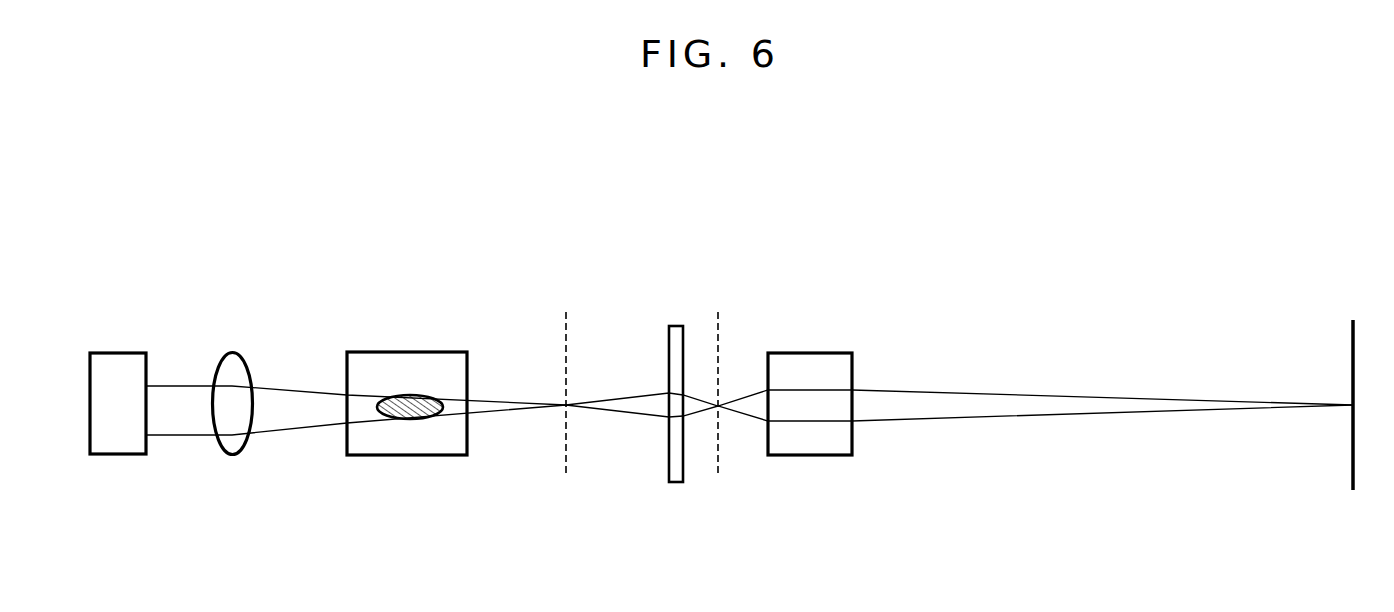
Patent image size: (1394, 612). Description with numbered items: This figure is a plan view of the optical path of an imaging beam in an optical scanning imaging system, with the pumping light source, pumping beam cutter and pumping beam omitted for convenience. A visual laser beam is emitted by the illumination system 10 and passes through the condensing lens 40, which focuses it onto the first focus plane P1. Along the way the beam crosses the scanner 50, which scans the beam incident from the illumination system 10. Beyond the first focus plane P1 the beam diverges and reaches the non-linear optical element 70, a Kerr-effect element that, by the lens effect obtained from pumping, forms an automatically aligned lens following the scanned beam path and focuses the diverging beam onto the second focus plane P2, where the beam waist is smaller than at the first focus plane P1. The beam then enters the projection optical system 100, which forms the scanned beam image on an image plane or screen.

The illumination system 10 is at (120, 352).
The condensing lens 40 is at (235, 352).
The scanner 50 is at (468, 350).
The non-linear optical element 70 is at (664, 346).
The projection optical system 100 is at (785, 353).
The first focus plane P1 is at (567, 408).
The second focus plane P2 is at (719, 408).